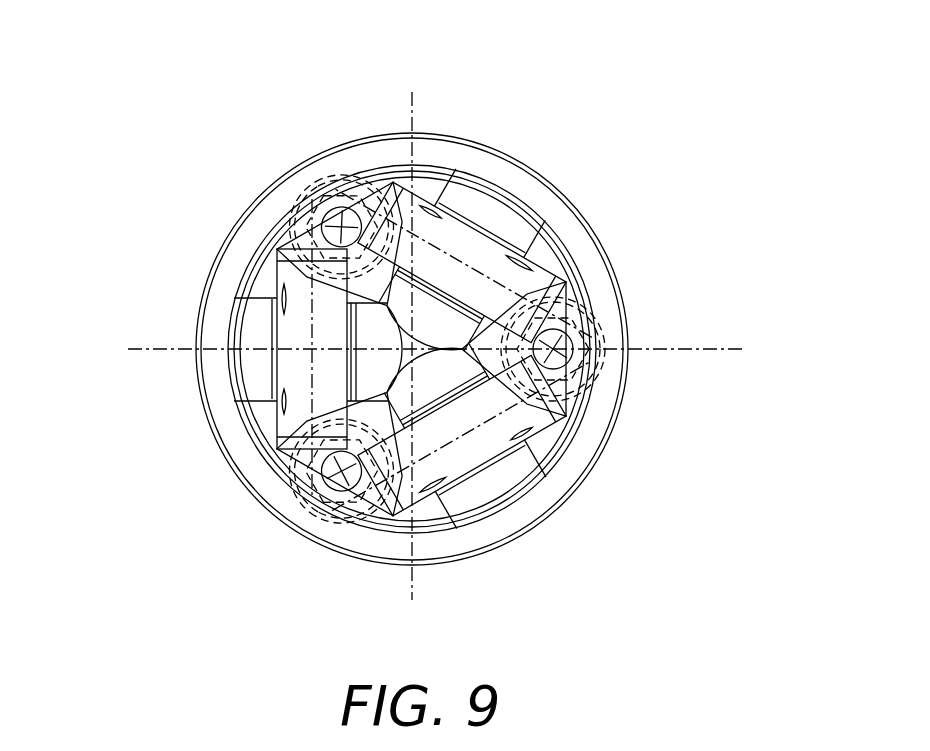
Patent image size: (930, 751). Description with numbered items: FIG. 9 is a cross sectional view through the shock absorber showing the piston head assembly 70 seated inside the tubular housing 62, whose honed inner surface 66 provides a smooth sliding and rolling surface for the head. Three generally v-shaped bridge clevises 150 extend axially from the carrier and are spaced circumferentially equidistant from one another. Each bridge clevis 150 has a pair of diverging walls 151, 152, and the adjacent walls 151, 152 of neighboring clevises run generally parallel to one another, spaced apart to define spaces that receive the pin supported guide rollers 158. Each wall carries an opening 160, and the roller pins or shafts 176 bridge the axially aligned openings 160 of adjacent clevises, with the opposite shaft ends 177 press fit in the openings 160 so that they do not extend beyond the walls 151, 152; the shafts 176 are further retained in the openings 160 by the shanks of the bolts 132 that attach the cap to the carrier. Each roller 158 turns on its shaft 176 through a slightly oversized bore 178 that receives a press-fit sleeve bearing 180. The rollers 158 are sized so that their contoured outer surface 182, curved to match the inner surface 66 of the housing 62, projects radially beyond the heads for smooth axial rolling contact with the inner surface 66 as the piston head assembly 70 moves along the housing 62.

The piston head assembly 70 is at (662, 92).
The inner surface 66 is at (580, 430).
The housing 62 is at (552, 452).
The bolts 132 is at (338, 168).
The bridge clevises 150 is at (262, 406).
The diverging wall 151 is at (258, 428).
The diverging wall 152 is at (258, 275).
The guide rollers 158 is at (238, 357).
The openings 160 is at (285, 277).
The roller pins 176 is at (255, 295).
The shaft ends 177 is at (277, 258).
The bores 178 is at (255, 313).
The sleeve bearings 180 is at (270, 382).
The outer surface 182 is at (230, 338).